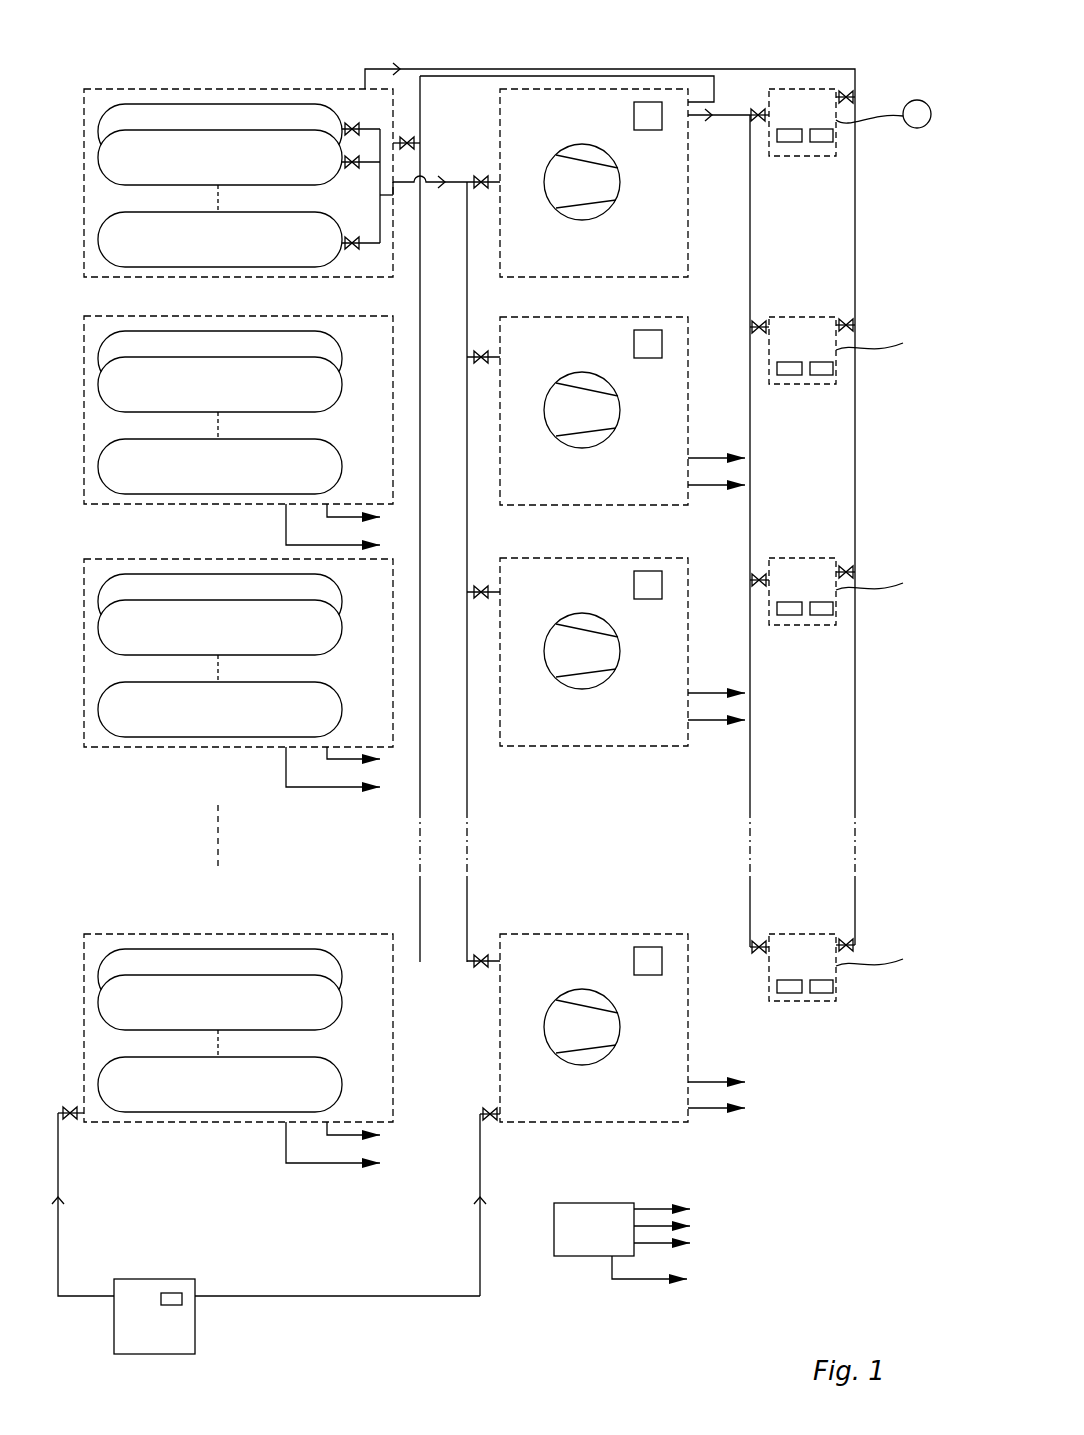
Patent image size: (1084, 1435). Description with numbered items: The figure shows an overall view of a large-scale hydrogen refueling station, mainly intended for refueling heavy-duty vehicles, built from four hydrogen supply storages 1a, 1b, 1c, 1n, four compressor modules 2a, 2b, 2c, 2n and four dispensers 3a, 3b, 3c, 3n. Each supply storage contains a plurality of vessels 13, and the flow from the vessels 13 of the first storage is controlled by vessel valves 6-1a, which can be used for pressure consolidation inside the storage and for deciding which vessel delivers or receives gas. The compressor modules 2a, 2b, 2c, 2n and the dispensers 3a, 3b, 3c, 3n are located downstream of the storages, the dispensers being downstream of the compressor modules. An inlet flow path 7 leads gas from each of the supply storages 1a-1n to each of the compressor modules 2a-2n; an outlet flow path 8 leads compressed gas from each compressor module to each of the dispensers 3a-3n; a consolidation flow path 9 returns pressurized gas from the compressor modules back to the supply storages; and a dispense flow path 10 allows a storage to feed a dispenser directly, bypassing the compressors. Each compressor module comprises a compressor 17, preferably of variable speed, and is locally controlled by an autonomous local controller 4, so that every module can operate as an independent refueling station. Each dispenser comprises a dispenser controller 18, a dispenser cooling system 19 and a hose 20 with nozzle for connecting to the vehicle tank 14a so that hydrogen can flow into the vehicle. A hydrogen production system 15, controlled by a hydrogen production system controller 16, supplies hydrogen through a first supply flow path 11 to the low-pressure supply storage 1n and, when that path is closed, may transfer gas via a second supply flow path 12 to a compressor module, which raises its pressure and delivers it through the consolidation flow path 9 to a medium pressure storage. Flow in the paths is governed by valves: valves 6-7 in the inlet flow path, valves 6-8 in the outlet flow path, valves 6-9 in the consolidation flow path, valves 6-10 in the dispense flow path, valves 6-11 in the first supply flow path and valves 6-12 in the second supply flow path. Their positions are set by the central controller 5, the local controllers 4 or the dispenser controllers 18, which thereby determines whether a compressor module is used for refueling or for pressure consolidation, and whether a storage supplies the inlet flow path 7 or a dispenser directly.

The hydrogen supply storage 1a is at (238, 150).
The hydrogen supply storage 1b is at (68, 314).
The hydrogen supply storage 1c is at (70, 549).
The low-pressure supply storage 1n is at (72, 914).
The vessels 13 is at (220, 185).
The vessel valves 6-1a is at (349, 121).
The consolidation flow path valves 6-9 is at (409, 135).
The inlet flow path valves 6-7 is at (483, 177).
The outlet flow path valves 6-8 is at (756, 109).
The dispense flow path valves 6-10 is at (851, 92).
The first supply flow path valves 6-11 is at (72, 1120).
The second supply flow path valves 6-12 is at (493, 1120).
The compressor module 2a is at (594, 183).
The compressor module 2b is at (593, 481).
The compressor module 2c is at (593, 722).
The compressor module 2n is at (593, 1098).
The local controller 4 is at (648, 116).
The compressor 17 is at (580, 220).
The dispenser 3a is at (813, 151).
The dispenser 3b is at (805, 383).
The dispenser 3c is at (805, 623).
The dispenser 3n is at (805, 1001).
The dispenser controller 18 is at (787, 143).
The dispenser cooling system 19 is at (822, 143).
The hose 20 is at (887, 121).
The vehicle tank 14a is at (917, 128).
The inlet flow path 7 is at (470, 287).
The outlet flow path 8 is at (750, 243).
The consolidation flow path 9 is at (418, 283).
The dispense flow path 10 is at (856, 240).
The first supply flow path 11 is at (58, 1230).
The second supply flow path 12 is at (448, 1296).
The hydrogen production system 15 is at (208, 1322).
The hydrogen production system controller 16 is at (182, 1300).
The central controller 5 is at (651, 1242).
The compressor modules 2a-2n is at (375, 525).
The dispenser modules 3a-3n is at (296, 531).
The supply storages 1a-1n is at (766, 499).